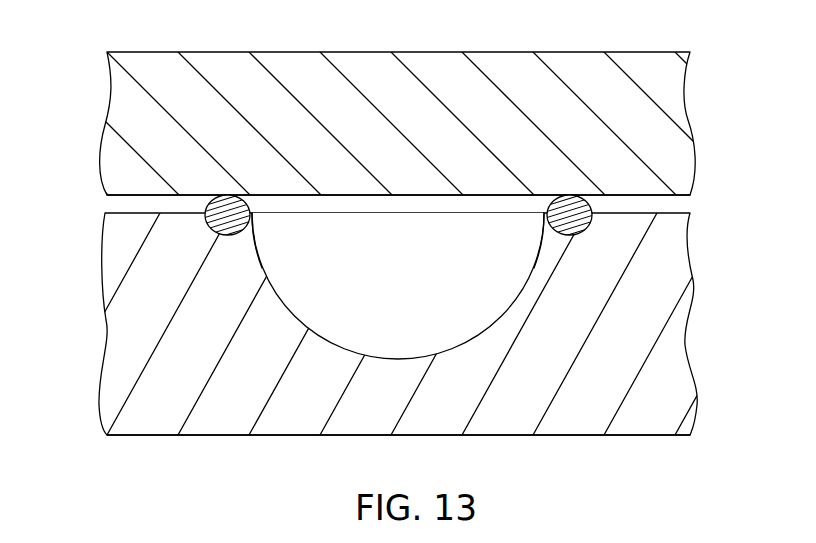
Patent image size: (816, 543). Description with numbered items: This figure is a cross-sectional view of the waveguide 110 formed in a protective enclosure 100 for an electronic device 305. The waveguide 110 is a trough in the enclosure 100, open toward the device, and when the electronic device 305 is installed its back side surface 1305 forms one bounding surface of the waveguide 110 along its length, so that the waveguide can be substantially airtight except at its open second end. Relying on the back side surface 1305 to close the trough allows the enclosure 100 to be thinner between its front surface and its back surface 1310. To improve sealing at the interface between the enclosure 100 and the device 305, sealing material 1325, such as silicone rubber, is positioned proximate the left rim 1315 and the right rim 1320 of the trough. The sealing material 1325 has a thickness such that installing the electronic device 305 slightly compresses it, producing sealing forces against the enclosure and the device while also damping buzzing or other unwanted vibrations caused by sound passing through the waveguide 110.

The electronic device 305 is at (603, 82).
The back side surface 1305 is at (482, 195).
The protective enclosure 100 is at (622, 425).
The back surface 1310 is at (207, 435).
The waveguide 110 is at (410, 298).
The left rim 1315 is at (248, 242).
The right rim 1320 is at (550, 238).
The sealing material 1325 is at (226, 212).